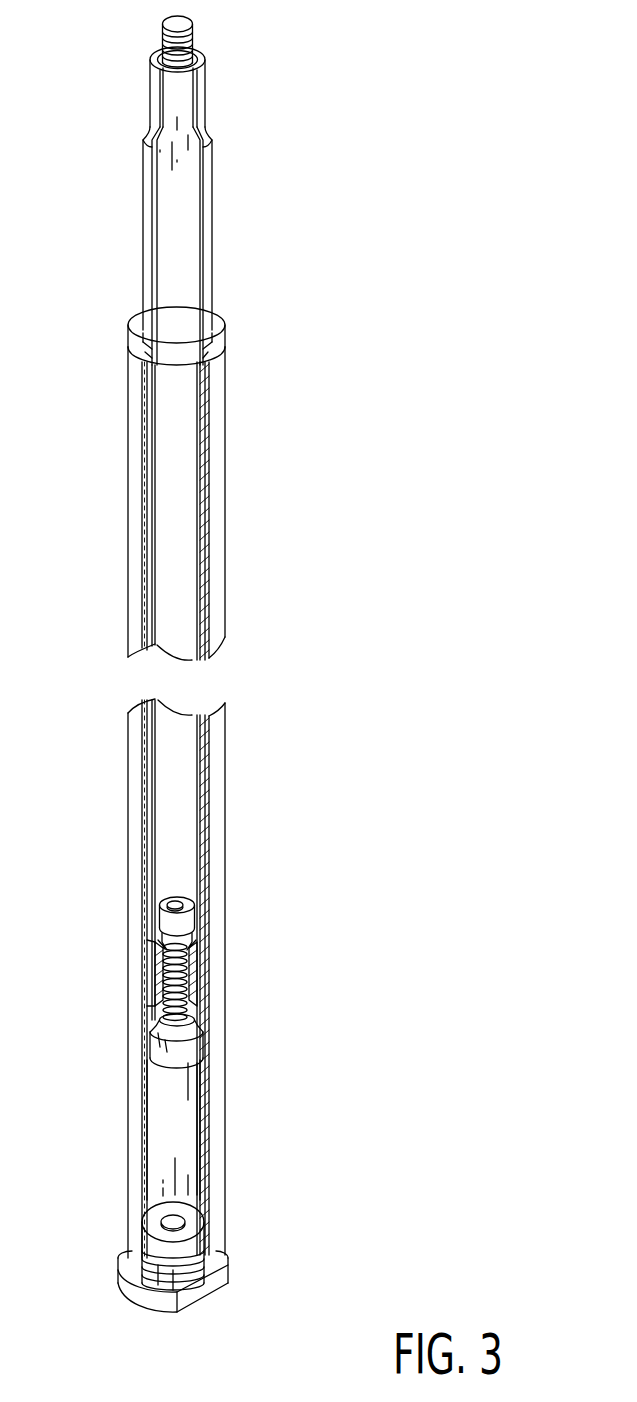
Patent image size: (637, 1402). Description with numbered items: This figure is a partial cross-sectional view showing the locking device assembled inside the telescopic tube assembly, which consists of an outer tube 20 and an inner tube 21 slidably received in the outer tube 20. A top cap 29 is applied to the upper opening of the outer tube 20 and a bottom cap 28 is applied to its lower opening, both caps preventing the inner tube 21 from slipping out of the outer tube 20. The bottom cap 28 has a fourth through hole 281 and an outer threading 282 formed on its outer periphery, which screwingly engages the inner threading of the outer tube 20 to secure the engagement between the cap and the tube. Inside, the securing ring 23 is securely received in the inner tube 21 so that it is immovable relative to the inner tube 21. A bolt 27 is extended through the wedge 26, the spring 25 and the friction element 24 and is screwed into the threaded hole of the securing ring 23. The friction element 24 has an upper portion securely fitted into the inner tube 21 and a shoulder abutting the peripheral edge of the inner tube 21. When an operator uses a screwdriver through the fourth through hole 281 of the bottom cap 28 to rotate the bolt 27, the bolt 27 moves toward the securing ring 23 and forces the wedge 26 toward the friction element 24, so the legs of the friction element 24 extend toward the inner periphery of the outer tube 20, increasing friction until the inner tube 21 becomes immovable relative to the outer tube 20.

The outer tube 20 is at (218, 423).
The inner tube 21 is at (207, 206).
The top cap 29 is at (223, 346).
The securing ring 23 is at (192, 908).
The bolt 27 is at (170, 902).
The friction element 24 is at (197, 1015).
The spring 25 is at (167, 1007).
The wedge 26 is at (193, 1043).
The bottom cap 28 is at (225, 1272).
The fourth through hole 281 is at (170, 1220).
The outer threading 282 is at (158, 1270).